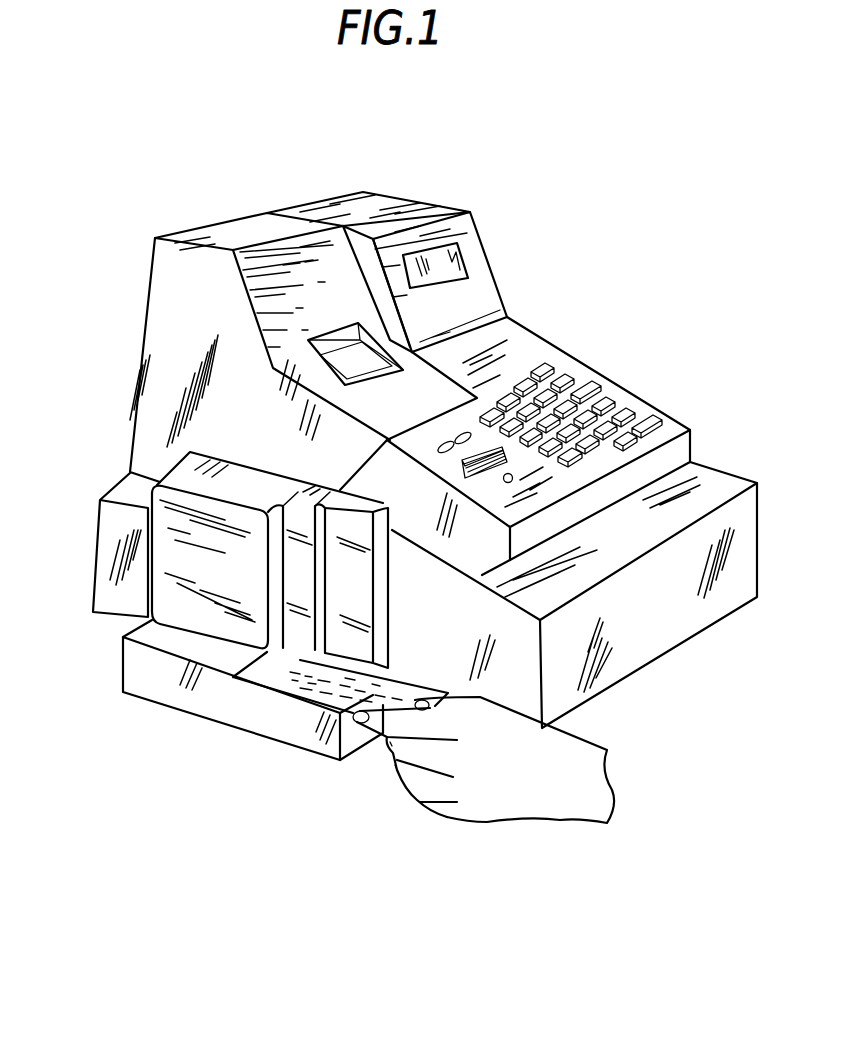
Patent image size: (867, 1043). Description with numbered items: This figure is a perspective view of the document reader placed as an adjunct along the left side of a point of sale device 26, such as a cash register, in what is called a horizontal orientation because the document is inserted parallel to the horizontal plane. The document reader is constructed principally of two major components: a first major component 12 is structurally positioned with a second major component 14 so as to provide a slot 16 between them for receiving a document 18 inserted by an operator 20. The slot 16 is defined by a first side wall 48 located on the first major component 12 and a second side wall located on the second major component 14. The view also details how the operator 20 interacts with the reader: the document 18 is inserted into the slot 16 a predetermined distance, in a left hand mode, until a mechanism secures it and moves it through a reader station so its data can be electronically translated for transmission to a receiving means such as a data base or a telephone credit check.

The point of sale device 26 is at (237, 237).
The second major component 14 is at (150, 502).
The slot 16 is at (233, 640).
The first side wall 48 is at (138, 632).
The first major component 12 is at (133, 677).
The document 18 is at (307, 687).
The operator 20 is at (565, 798).